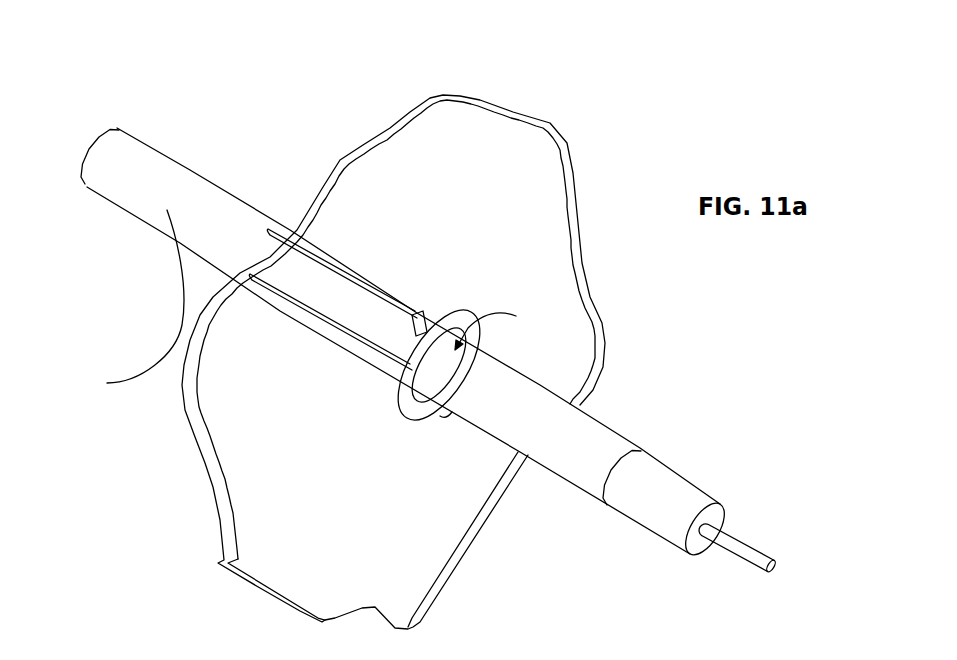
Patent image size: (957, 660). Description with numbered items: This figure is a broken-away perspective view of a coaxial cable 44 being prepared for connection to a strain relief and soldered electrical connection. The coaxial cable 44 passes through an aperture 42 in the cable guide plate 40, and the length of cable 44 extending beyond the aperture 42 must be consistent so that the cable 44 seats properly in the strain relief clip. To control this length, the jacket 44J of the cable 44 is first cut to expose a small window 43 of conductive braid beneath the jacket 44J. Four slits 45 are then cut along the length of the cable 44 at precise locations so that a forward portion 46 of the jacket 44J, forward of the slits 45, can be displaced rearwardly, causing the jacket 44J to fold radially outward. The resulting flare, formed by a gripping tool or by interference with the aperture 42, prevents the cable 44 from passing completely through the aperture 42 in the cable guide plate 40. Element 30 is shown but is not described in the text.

The skin layer 30 is at (357, 363).
The cable guide plate 40 is at (347, 362).
The aperture 42 is at (452, 312).
The window 43 is at (499, 329).
The coaxial cable 44 is at (107, 383).
The jacket 44J is at (450, 418).
The slits 45 is at (345, 280).
The forward portion 46 is at (422, 316).